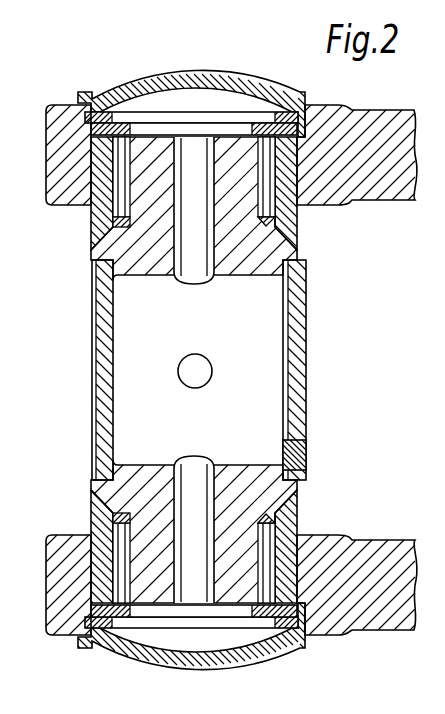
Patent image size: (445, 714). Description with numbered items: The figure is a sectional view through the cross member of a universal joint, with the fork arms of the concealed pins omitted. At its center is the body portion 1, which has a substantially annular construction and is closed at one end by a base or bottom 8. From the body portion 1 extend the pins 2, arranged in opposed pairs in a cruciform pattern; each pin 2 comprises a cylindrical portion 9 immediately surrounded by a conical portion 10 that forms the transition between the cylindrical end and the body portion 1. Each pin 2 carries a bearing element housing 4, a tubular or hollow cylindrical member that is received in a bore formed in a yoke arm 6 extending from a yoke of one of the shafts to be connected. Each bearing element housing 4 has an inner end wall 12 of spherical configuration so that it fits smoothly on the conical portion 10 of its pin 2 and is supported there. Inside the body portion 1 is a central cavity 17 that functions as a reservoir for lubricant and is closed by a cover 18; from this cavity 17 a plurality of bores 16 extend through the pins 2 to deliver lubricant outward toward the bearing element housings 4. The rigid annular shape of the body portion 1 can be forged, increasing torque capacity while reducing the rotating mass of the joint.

The body portion 1 is at (143, 258).
The pin 2 is at (151, 150).
The bearing element housing 4 is at (100, 222).
The yoke arm 6 is at (387, 117).
The base or bottom 8 is at (103, 417).
The cylindrical portion 9 is at (265, 140).
The conical portion 10 is at (268, 232).
The inner end wall 12 is at (290, 241).
The bore 16 is at (196, 275).
The central cavity 17 is at (272, 358).
The cover 18 is at (307, 463).